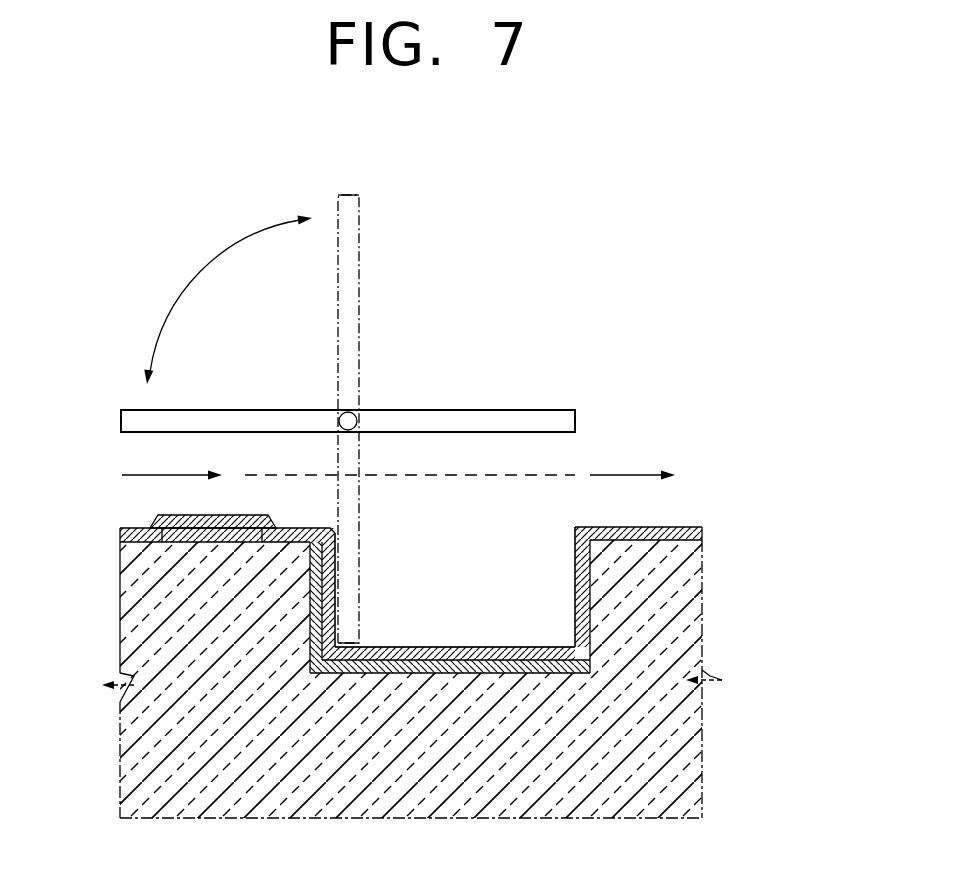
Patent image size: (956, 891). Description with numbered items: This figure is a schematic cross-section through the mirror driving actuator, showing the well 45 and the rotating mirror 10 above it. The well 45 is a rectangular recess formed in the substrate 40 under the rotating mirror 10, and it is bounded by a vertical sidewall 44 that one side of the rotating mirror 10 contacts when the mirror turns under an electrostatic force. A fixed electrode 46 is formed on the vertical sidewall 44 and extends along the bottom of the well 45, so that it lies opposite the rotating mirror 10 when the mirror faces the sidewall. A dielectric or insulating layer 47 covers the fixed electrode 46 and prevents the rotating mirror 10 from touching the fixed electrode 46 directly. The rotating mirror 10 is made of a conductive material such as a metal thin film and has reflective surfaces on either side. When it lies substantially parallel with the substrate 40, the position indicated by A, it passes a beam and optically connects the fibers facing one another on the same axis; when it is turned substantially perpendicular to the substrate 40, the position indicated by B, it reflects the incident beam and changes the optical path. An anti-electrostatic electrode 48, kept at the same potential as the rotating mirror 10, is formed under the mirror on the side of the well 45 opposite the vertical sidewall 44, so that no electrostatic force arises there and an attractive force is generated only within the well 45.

The rotating mirror 10 is at (527, 415).
The substrate 40 is at (686, 608).
The vertical sidewall 44 is at (387, 572).
The well 45 is at (549, 531).
The fixed electrode 46 is at (425, 676).
The dielectric or insulating layer 47 is at (672, 526).
The anti-electrostatic electrode 48 is at (165, 534).
The parallel position A is at (570, 391).
The perpendicular position B is at (378, 235).